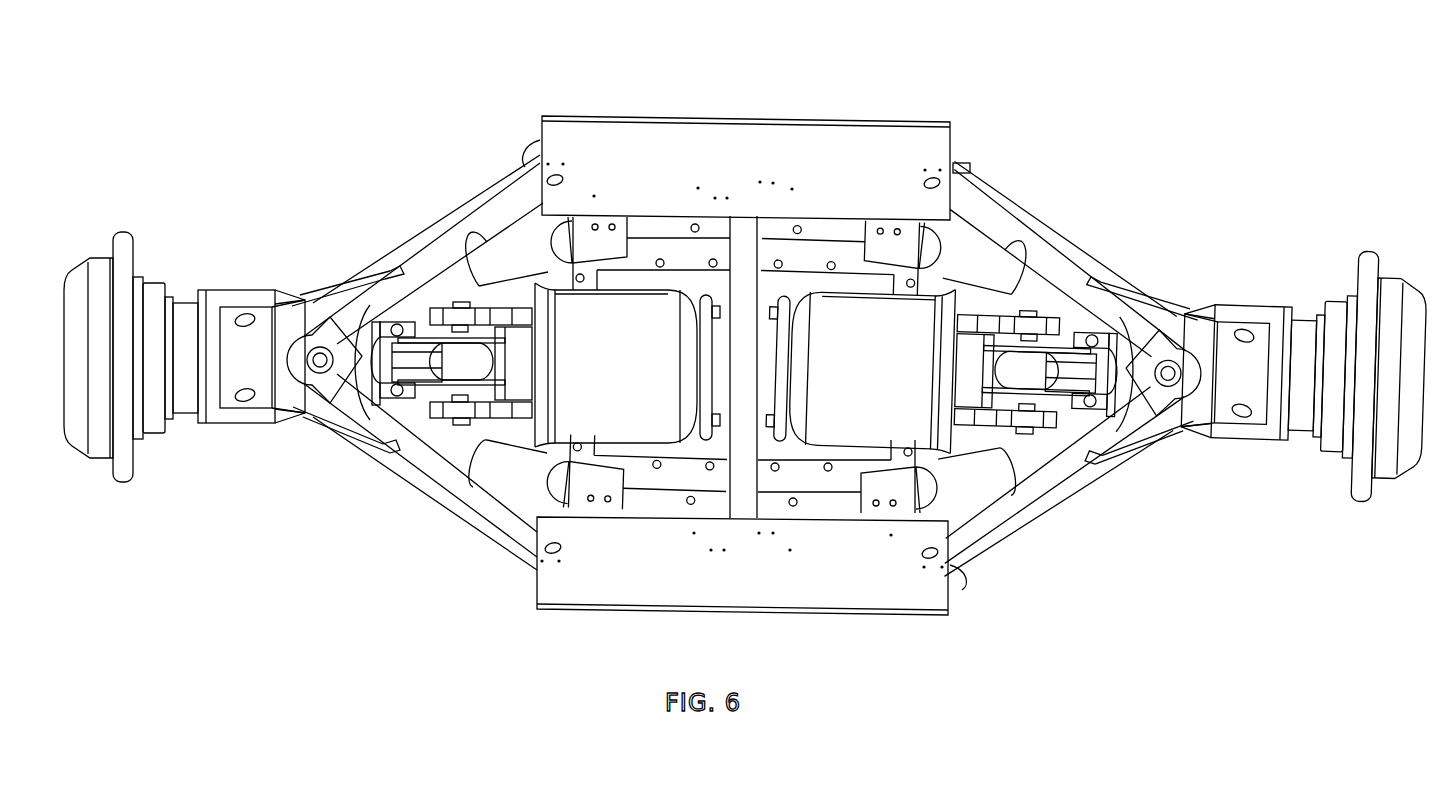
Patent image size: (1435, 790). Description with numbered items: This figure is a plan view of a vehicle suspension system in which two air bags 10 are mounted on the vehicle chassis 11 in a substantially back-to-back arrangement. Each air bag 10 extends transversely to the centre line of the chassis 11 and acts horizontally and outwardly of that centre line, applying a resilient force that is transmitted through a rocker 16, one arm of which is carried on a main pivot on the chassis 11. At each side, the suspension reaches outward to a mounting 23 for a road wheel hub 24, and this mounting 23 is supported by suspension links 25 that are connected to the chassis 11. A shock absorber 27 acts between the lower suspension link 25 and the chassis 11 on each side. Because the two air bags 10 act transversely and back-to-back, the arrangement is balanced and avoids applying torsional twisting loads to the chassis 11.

The air bag 10 is at (647, 372).
The vehicle chassis 11 is at (768, 130).
The rocker 16 is at (463, 365).
The mounting 23 is at (236, 428).
The road wheel hub 24 is at (118, 232).
The suspension links 25 is at (423, 264).
The shock absorber 27 is at (514, 248).